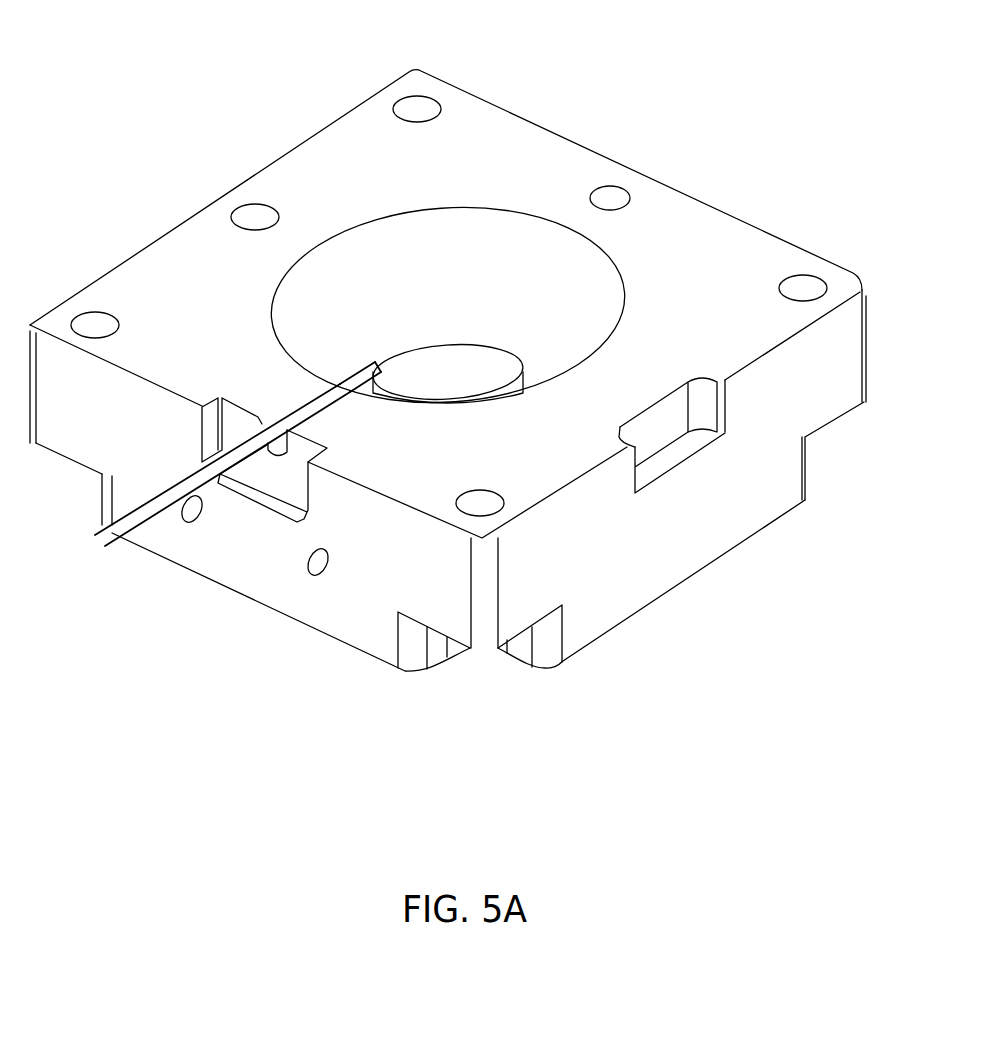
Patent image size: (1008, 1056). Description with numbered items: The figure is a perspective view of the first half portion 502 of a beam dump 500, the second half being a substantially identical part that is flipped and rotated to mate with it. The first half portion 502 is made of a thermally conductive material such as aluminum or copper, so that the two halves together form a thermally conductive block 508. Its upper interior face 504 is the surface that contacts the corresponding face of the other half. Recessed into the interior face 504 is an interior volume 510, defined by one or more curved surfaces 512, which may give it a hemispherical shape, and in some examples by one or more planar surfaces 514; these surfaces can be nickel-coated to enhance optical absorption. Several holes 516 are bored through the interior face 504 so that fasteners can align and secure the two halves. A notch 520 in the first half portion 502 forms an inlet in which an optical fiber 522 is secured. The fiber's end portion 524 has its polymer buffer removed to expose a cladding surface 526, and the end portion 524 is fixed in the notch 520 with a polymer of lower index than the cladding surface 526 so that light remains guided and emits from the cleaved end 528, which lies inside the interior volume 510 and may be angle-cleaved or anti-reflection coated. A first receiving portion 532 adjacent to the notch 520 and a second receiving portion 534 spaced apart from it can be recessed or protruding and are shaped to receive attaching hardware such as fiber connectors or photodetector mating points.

The beam dump 500 is at (460, 362).
The first half portion 502 is at (680, 548).
The interior face 504 is at (715, 245).
The thermally conductive block 508 is at (775, 452).
The interior volume 510 is at (402, 240).
The curved surfaces 512 is at (514, 237).
The planar surfaces 514 is at (466, 367).
The holes 516 is at (417, 107).
The notch 520 is at (297, 398).
The optical fiber 522 is at (286, 463).
The end portion 524 is at (354, 364).
The cladding surface 526 is at (370, 363).
The cleaved end 528 is at (378, 361).
The first receiving portion 532 is at (278, 470).
The second receiving portion 534 is at (657, 430).